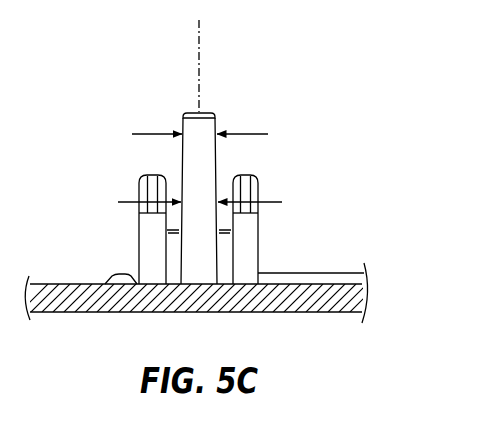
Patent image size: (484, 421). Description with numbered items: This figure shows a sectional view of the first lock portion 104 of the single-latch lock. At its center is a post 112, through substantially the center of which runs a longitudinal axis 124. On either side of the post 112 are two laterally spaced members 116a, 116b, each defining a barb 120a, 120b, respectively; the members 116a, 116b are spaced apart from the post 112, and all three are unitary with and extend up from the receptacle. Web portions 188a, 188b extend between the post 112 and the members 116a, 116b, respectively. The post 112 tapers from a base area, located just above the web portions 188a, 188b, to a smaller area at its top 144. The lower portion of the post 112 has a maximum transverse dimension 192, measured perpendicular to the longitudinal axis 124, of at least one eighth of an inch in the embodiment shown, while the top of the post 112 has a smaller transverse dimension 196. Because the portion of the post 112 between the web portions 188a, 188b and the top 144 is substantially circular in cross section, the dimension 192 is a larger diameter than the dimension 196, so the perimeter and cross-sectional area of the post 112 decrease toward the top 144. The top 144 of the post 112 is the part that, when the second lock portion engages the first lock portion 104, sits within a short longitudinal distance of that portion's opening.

The first lock portion 104 is at (230, 98).
The post 112 is at (217, 124).
The laterally spaced member 116a is at (141, 176).
The laterally spaced member 116b is at (256, 175).
The barb 120a is at (153, 213).
The barb 120b is at (247, 213).
The longitudinal axis 124 is at (201, 62).
The top of post 144 is at (192, 113).
The web portion 188a is at (172, 246).
The web portion 188b is at (228, 246).
The maximum transverse dimension 192 is at (222, 202).
The transverse dimension 196 is at (223, 133).